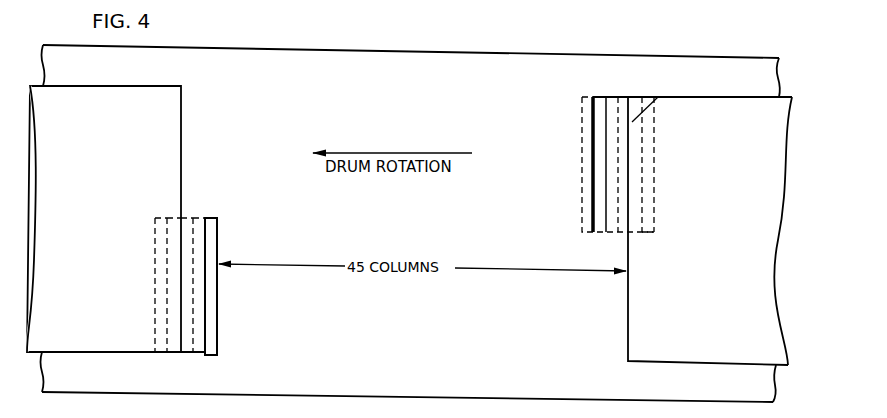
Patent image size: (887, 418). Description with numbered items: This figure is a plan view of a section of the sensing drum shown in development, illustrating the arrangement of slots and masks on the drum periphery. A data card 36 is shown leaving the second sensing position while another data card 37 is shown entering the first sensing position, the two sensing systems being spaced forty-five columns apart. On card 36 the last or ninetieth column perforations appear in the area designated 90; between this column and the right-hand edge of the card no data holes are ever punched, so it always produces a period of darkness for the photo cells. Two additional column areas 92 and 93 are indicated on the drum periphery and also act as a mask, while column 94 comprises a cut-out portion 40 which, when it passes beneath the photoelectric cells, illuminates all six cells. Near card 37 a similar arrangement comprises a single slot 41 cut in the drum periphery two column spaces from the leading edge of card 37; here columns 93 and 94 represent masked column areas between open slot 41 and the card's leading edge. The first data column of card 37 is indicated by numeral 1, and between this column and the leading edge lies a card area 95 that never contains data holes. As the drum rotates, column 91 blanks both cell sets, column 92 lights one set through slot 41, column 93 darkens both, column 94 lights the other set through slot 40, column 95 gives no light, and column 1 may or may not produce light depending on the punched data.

The data card 36 is at (174, 122).
The data card 37 is at (713, 107).
The cut-out portion 40 is at (217, 238).
The single slot 41 is at (592, 183).
The ninetieth column area 90 is at (161, 297).
The column 91 is at (172, 355).
The column area 92 is at (393, 226).
The column area 93 is at (197, 355).
The column 94 is at (422, 226).
The card area 95 is at (637, 96).
The first data column 1 is at (648, 154).